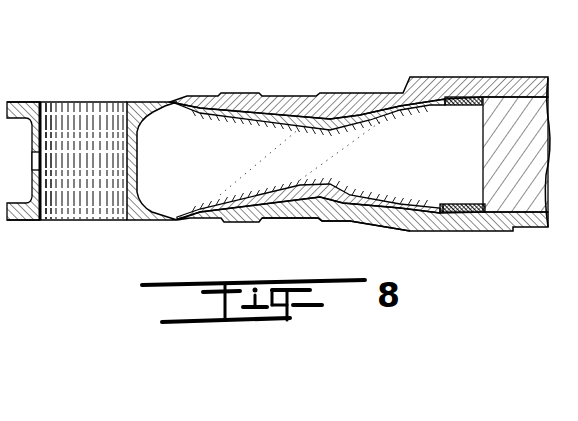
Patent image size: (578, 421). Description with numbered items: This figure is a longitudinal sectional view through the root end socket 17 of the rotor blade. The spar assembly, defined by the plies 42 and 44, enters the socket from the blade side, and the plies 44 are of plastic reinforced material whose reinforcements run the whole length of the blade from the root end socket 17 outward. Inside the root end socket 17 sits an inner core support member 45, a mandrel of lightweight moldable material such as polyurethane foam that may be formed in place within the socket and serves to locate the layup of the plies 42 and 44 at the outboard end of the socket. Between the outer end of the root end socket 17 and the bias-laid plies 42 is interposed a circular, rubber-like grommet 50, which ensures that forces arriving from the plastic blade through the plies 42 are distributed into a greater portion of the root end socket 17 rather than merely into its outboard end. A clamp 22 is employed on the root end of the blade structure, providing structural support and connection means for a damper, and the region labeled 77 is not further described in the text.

The root end socket 17 is at (137, 104).
The clamp 22 is at (343, 226).
The plies 42 is at (269, 112).
The plies 44 is at (380, 100).
The inner core support member 45 is at (157, 194).
The grommet 50 is at (463, 102).
The shoulder 77 is at (443, 208).